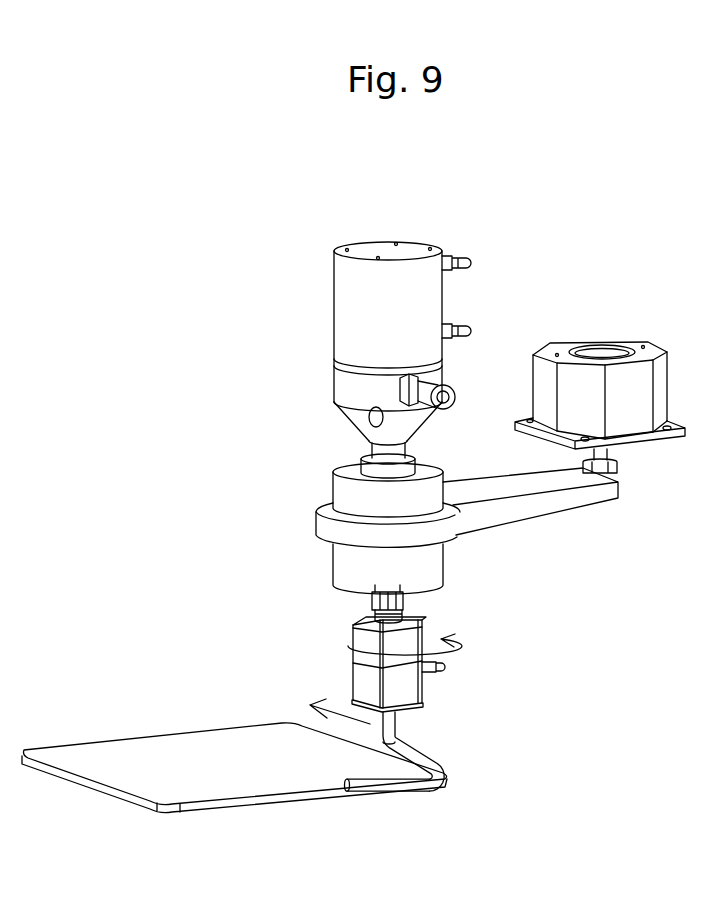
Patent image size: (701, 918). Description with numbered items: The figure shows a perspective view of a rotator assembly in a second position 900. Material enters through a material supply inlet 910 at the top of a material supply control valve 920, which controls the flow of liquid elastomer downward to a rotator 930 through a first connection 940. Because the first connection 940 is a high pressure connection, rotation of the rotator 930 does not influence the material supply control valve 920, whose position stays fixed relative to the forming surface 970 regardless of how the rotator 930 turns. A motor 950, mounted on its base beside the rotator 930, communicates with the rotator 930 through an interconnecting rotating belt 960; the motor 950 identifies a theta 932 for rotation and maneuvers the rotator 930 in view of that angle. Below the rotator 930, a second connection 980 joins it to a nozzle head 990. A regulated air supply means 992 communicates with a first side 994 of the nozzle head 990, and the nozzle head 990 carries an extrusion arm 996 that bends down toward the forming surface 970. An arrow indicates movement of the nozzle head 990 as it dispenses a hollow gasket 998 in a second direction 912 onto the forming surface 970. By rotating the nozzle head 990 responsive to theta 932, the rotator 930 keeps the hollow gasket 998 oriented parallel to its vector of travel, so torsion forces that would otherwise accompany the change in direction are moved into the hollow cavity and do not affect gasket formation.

The second position 900 is at (500, 222).
The material supply inlet 910 is at (445, 390).
The second direction 912 is at (343, 713).
The material supply control valve 920 is at (347, 343).
The rotator 930 is at (340, 492).
The theta 932 is at (460, 647).
The first connection 940 is at (348, 458).
The motor 950 is at (560, 345).
The interconnecting rotating belt 960 is at (533, 505).
The forming surface 970 is at (140, 758).
The second connection 980 is at (398, 600).
The nozzle head 990 is at (400, 617).
The regulated air supply means 992 is at (443, 665).
The first side 994 is at (422, 692).
The extrusion arm 996 is at (392, 738).
The hollow gasket 998 is at (395, 774).